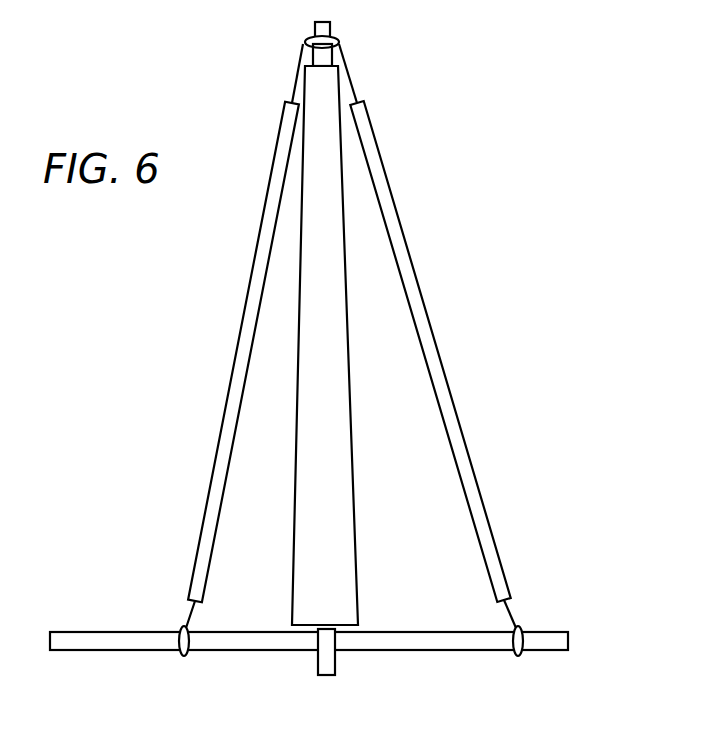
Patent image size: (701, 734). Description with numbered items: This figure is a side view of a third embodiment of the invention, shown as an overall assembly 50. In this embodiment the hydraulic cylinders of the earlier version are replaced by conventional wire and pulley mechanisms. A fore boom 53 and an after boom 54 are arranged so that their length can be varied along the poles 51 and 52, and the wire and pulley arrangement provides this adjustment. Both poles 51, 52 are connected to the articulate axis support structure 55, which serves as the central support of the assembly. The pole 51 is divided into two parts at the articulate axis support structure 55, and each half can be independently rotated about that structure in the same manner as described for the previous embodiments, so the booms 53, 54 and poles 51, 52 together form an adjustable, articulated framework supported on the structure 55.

The stand assembly 50 is at (480, 230).
The pole 51 is at (400, 641).
The pole 52 is at (333, 16).
The fore boom 53 is at (455, 422).
The after boom 54 is at (230, 420).
The articulate axis support structure 55 is at (330, 386).